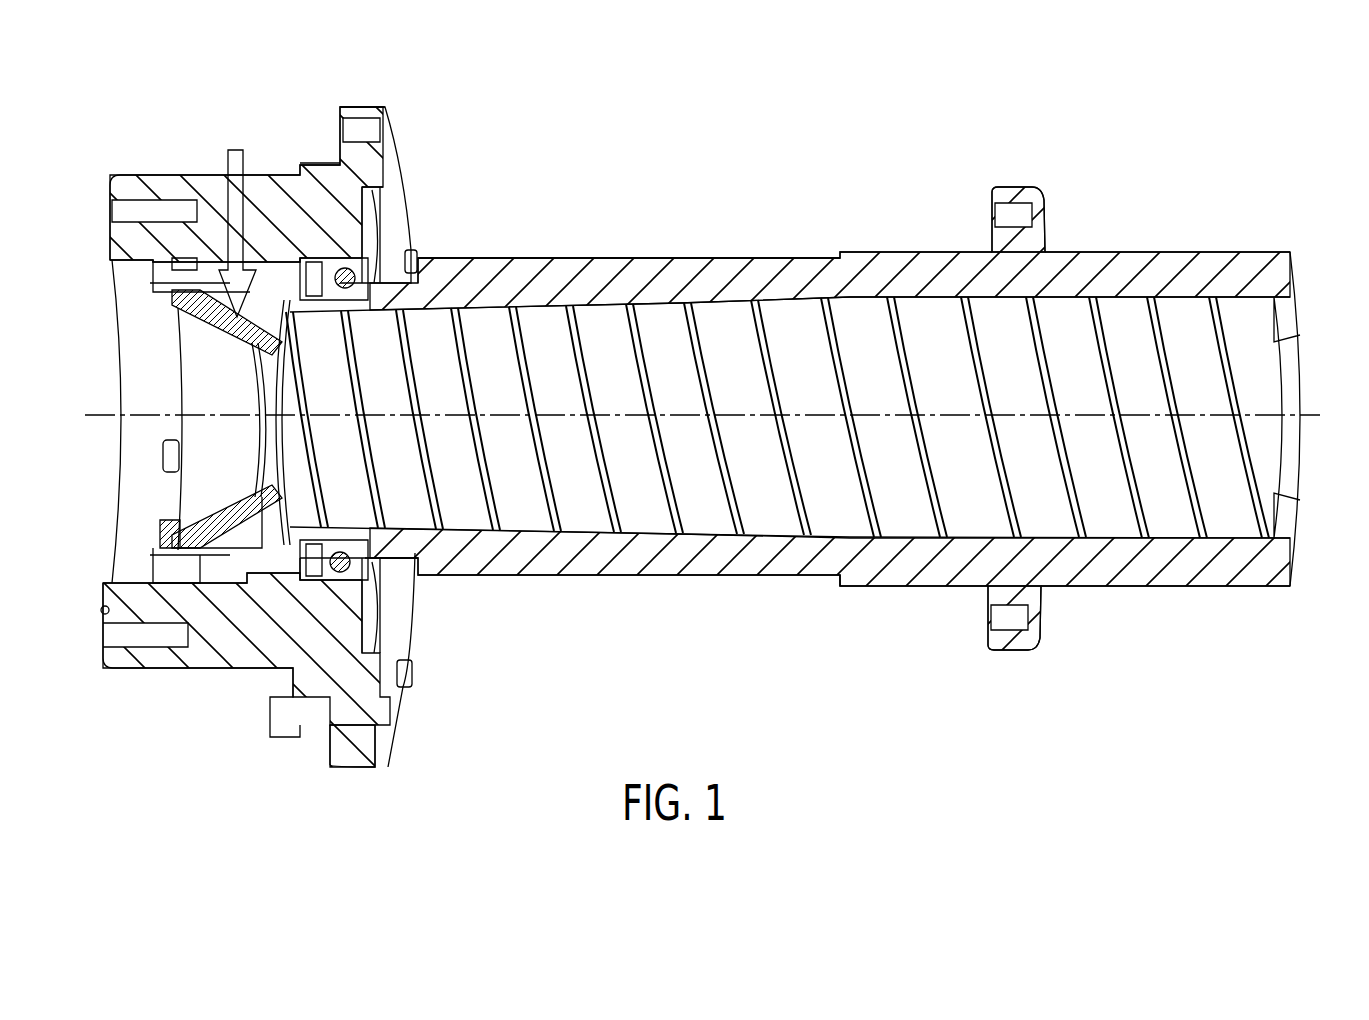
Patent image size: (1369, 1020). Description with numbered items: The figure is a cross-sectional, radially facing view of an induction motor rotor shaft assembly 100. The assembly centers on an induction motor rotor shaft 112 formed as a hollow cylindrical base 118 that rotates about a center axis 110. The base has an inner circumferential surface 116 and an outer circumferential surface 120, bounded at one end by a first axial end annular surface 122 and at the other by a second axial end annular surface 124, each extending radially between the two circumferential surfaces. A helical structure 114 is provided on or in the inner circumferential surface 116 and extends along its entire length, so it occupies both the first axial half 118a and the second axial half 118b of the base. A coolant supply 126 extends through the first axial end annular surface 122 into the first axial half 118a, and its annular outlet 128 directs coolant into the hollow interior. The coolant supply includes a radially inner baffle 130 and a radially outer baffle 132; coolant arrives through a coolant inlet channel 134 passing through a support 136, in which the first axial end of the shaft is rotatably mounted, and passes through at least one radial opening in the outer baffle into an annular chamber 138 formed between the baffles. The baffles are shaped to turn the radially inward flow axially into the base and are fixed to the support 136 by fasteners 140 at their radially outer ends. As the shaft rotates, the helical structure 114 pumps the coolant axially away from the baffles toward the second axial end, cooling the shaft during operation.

The induction motor rotor shaft assembly 100 is at (1088, 128).
The center axis 110 is at (100, 413).
The induction motor rotor shaft 112 is at (819, 401).
The helical structure 114 is at (722, 545).
The inner circumferential surface 116 is at (848, 542).
The hollow cylindrical base 118 is at (765, 572).
The first axial half 118a is at (604, 233).
The second axial half 118b is at (966, 236).
The outer circumferential surface 120 is at (767, 257).
The first axial end annular surface 122 is at (165, 294).
The second axial end annular surface 124 is at (1286, 276).
The coolant supply 126 is at (250, 575).
The outlet 128 is at (345, 556).
The radially inner baffle 130 is at (178, 523).
The radially outer baffle 132 is at (232, 552).
The coolant inlet channel 134 is at (227, 230).
The support 136 is at (318, 184).
The annular chamber 138 is at (245, 322).
The fasteners 140 is at (165, 268).